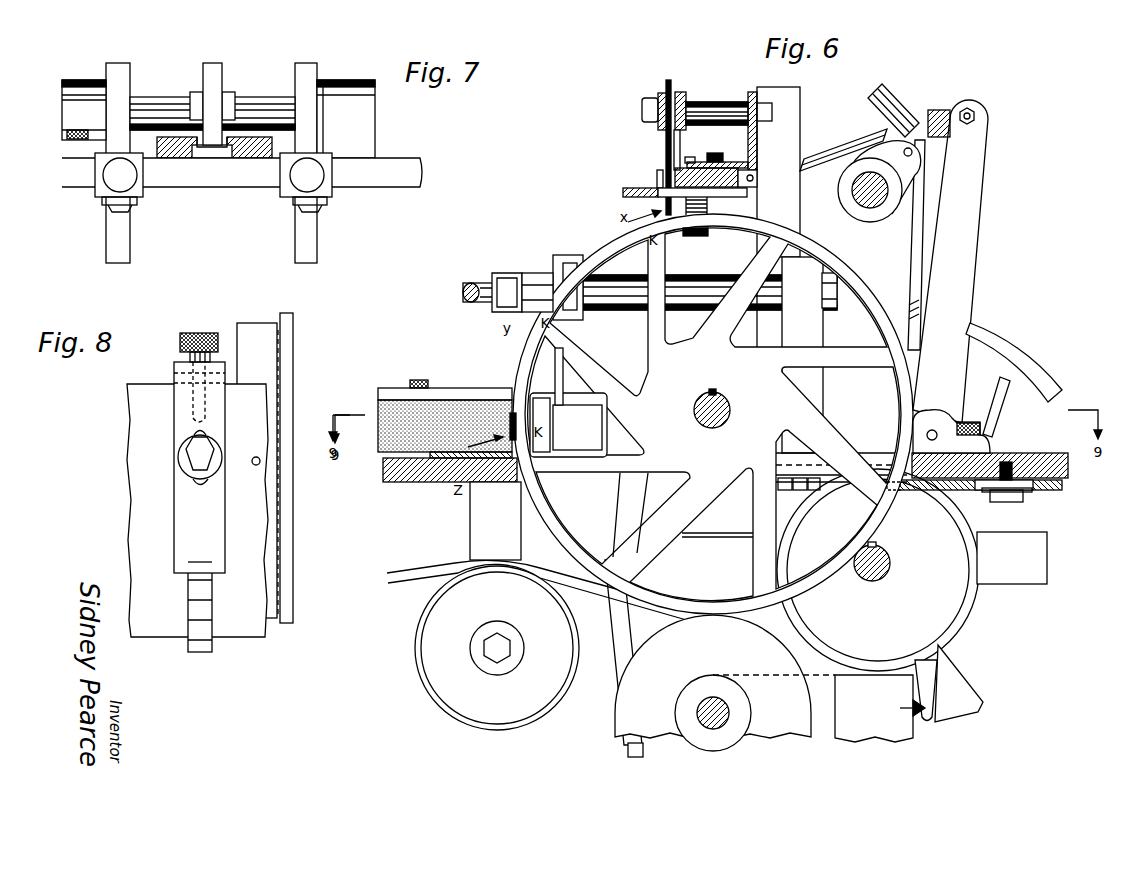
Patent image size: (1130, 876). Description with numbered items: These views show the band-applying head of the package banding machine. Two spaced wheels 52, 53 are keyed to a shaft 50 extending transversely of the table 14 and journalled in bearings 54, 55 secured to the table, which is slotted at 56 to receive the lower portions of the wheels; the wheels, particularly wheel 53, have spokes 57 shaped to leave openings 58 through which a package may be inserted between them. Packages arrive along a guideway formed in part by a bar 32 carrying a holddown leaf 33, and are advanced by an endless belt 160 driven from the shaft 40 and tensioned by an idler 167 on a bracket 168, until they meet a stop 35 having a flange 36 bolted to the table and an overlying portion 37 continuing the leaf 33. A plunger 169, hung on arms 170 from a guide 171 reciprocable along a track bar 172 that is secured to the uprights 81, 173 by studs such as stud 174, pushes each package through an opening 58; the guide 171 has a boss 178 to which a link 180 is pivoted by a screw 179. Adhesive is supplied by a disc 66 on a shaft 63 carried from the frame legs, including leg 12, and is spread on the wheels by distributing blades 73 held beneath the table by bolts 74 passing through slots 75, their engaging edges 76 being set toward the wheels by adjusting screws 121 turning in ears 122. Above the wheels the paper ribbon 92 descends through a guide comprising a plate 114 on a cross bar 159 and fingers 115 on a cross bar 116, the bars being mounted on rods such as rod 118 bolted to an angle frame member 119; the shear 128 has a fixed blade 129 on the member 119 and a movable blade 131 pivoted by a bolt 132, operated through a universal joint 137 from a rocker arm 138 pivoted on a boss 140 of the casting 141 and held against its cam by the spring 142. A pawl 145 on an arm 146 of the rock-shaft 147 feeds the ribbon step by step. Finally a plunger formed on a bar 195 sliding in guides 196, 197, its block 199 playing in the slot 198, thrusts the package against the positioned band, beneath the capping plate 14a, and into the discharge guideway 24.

In FIG. 6, the leg 12 is at (892, 725).
In FIG. 7, the table 14 is at (398, 173).
In FIG. 8, the table 14 is at (140, 410).
In FIG. 6, the table 14 is at (397, 482).
In FIG. 6, the capping plate 14a is at (923, 717).
In FIG. 6, the guideway 24 is at (380, 440).
In FIG. 6, the bar 32 is at (437, 398).
In FIG. 6, the leaf 33 is at (452, 390).
In FIG. 6, the stop 35 is at (607, 420).
In FIG. 6, the flange 36 is at (640, 463).
In FIG. 6, the overlying portion 37 is at (583, 392).
In FIG. 6, the shaft 40 is at (892, 563).
In FIG. 7, the shaft 50 is at (142, 107).
In FIG. 6, the shaft 50 is at (722, 397).
In FIG. 7, the wheel 52 is at (123, 257).
In FIG. 8, the wheel 52 is at (193, 643).
In FIG. 7, the wheel 53 is at (313, 252).
In FIG. 6, the wheel 53 is at (767, 403).
In FIG. 7, the bearing 54 is at (340, 80).
In FIG. 7, the bearing 55 is at (75, 82).
In FIG. 6, the slot 56 is at (518, 490).
In FIG. 6, the spokes 57 is at (705, 500).
In FIG. 6, the openings 58 is at (515, 410).
In FIG. 6, the shaft 63 is at (713, 698).
In FIG. 6, the disc 66 is at (618, 722).
In FIG. 8, the distributing blade 73 is at (193, 523).
In FIG. 7, the bolt 74 is at (327, 203).
In FIG. 8, the bolt 74 is at (193, 457).
In FIG. 6, the bolt 74 is at (1020, 502).
In FIG. 8, the slot 75 is at (193, 487).
In FIG. 6, the slot 75 is at (983, 492).
In FIG. 8, the engaging edge 76 is at (183, 573).
In FIG. 6, the engaging edge 76 is at (895, 492).
In FIG. 6, the post 81 is at (800, 120).
In FIG. 6, the spring 92 is at (670, 205).
In FIG. 6, the plate 114 is at (665, 140).
In FIG. 6, the fingers 115 is at (680, 142).
In FIG. 6, the cross bar 116 is at (684, 95).
In FIG. 6, the rod 118 is at (730, 102).
In FIG. 6, the angle cross frame member 119 is at (755, 145).
In FIG. 7, the adjusting screw 121 is at (307, 180).
In FIG. 8, the adjusting screw 121 is at (200, 332).
In FIG. 6, the adjusting screw 121 is at (655, 105).
In FIG. 7, the ear 122 is at (285, 163).
In FIG. 8, the ear 122 is at (177, 373).
In FIG. 6, the shear 128 is at (625, 192).
In FIG. 6, the fixed shear blade 129 is at (745, 187).
In FIG. 6, the movable shear blade 131 is at (660, 186).
In FIG. 6, the bolt 132 is at (705, 235).
In FIG. 6, the universal joint 137 is at (932, 110).
In FIG. 6, the rocker arm 138 is at (965, 203).
In FIG. 6, the boss 140 is at (932, 415).
In FIG. 6, the casting 141 is at (915, 282).
In FIG. 6, the spring 142 is at (930, 680).
In FIG. 6, the pawl 145 is at (890, 84).
In FIG. 6, the arm 146 is at (910, 168).
In FIG. 6, the rock-shaft 147 is at (875, 208).
In FIG. 6, the cross bar 159 is at (658, 100).
In FIG. 6, the endless belt 160 is at (412, 556).
In FIG. 6, the idler 167 is at (430, 690).
In FIG. 6, the bracket 168 is at (503, 540).
In FIG. 6, the plunger 169 is at (612, 440).
In FIG. 6, the arms 170 is at (565, 373).
In FIG. 6, the guide 171 is at (566, 258).
In FIG. 6, the track bar 172 is at (583, 300).
In FIG. 7, the upright 173 is at (358, 125).
In FIG. 6, the upright 173 is at (828, 340).
In FIG. 6, the stud 174 is at (695, 283).
In FIG. 6, the boss 178 is at (530, 270).
In FIG. 6, the screw 179 is at (487, 278).
In FIG. 6, the link 180 is at (465, 293).
In FIG. 7, the bar 195 is at (203, 147).
In FIG. 8, the bar 195 is at (287, 343).
In FIG. 7, the guide 196 is at (163, 137).
In FIG. 8, the guide 196 is at (253, 332).
In FIG. 7, the guide 197 is at (270, 123).
In FIG. 7, the slot 198 is at (225, 143).
In FIG. 7, the block 199 is at (213, 95).